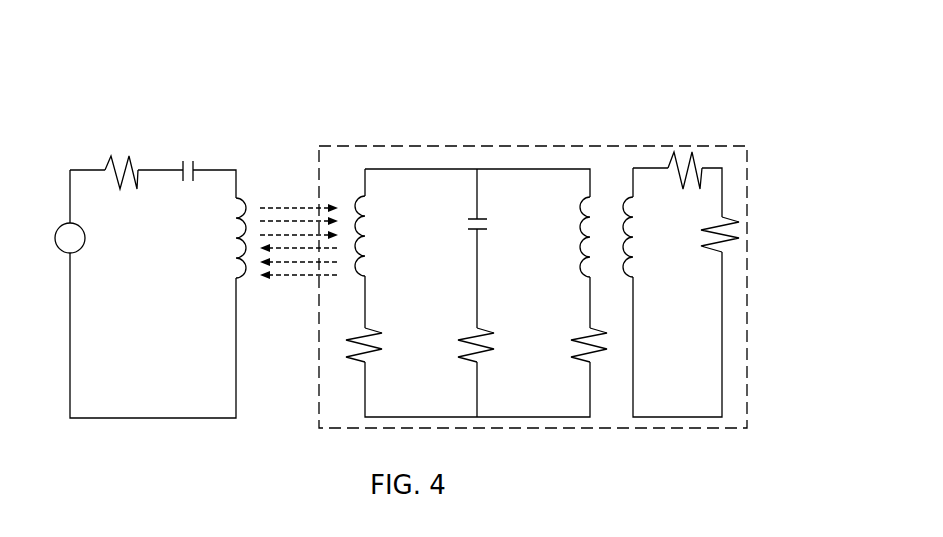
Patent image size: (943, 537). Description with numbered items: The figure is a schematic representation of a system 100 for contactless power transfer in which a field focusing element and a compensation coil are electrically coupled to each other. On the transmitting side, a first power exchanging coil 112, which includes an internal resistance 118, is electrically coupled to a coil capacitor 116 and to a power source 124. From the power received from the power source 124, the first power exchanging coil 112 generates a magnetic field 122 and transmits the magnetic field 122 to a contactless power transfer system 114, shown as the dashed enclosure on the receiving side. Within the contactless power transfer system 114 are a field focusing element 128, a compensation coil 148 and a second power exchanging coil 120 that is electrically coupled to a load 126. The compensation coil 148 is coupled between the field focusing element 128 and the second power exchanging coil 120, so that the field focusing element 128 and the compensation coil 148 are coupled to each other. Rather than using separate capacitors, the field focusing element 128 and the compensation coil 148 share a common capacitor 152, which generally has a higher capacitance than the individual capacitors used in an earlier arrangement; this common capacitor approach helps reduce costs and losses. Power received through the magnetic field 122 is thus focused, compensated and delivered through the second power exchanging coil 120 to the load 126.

The system 100 is at (628, 52).
The first power exchanging coil 112 is at (85, 169).
The contactless power transfer system 114 is at (495, 146).
The coil capacitor 116 is at (194, 166).
The internal resistance 118 is at (128, 160).
The second power exchanging coil 120 is at (650, 166).
The magnetic field 122 is at (272, 204).
The power source 124 is at (85, 238).
The load 126 is at (721, 252).
The field focusing element 128 is at (367, 244).
The compensation coil 148 is at (580, 224).
The common capacitor 152 is at (470, 219).